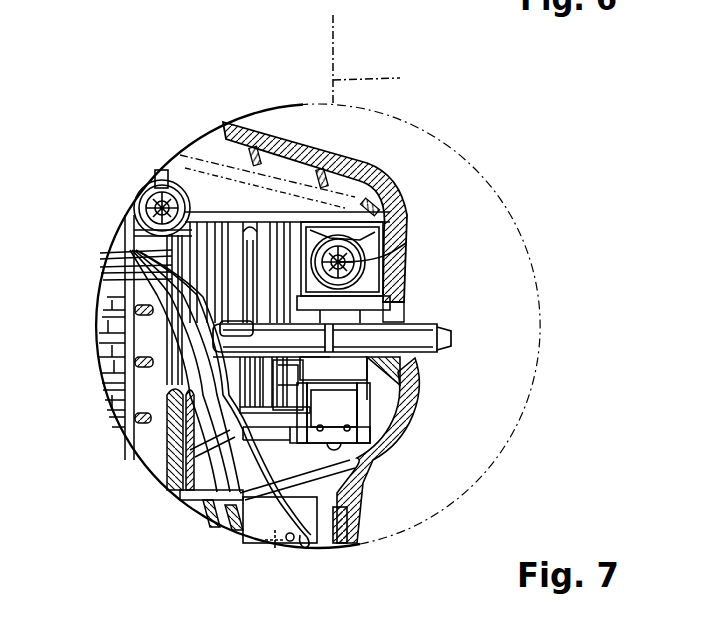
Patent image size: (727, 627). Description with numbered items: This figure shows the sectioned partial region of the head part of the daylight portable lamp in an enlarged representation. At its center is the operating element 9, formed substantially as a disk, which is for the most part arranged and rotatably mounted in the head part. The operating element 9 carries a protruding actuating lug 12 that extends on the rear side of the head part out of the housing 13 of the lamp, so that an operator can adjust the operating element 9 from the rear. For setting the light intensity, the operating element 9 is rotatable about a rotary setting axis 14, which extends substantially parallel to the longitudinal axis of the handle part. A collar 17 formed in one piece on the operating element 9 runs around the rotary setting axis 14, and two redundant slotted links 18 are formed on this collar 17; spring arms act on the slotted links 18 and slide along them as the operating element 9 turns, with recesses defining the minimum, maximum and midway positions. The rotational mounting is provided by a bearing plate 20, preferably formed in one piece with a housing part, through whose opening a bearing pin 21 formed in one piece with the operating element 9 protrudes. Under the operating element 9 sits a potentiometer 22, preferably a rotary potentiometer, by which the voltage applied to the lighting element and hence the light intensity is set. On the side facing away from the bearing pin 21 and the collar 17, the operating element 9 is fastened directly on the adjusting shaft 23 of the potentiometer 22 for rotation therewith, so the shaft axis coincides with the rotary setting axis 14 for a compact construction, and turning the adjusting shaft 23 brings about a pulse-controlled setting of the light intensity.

The operating element 9 is at (452, 292).
The actuating lug 12 is at (451, 355).
The housing 13 is at (373, 182).
The rotary setting axis 14 is at (400, 78).
The collar 17 is at (287, 260).
The slotted links 18 is at (373, 317).
The bearing plate 20 is at (372, 273).
The bearing pin 21 is at (400, 318).
The potentiometer 22 is at (342, 410).
The adjusting shaft 23 is at (300, 363).